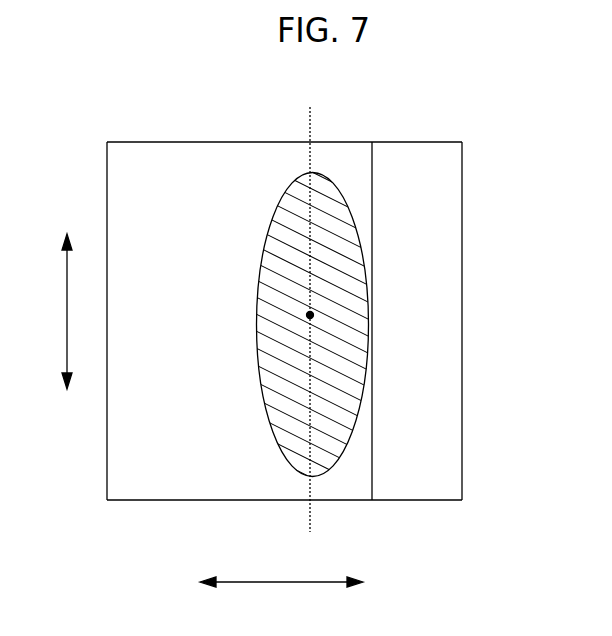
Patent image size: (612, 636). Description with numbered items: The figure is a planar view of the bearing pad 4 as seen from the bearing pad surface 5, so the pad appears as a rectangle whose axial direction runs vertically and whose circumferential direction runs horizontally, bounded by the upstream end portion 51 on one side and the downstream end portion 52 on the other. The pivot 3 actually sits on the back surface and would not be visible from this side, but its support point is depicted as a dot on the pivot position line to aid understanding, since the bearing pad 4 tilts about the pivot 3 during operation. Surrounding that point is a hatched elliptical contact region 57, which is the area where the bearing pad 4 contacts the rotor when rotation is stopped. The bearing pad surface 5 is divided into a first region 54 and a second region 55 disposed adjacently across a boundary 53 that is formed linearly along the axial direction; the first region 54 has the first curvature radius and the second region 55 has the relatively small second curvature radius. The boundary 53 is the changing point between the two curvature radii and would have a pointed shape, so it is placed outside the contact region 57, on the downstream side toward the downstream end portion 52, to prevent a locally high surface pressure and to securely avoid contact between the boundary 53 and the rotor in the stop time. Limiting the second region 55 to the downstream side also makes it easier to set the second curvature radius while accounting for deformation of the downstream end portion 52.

The pivot 3 is at (314, 317).
The bearing pad 4 is at (494, 192).
The bearing pad surface 5 is at (443, 247).
The upstream end portion 51 is at (107, 447).
The downstream end portion 52 is at (462, 447).
The boundary 53 is at (370, 167).
The first region 54 is at (185, 167).
The second region 55 is at (410, 160).
The contact region 57 is at (287, 178).